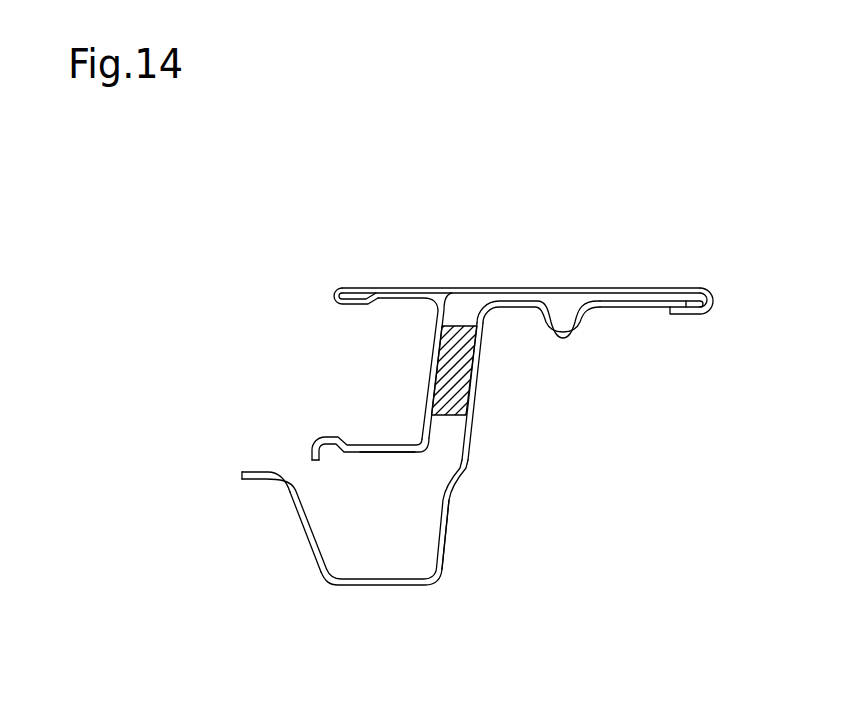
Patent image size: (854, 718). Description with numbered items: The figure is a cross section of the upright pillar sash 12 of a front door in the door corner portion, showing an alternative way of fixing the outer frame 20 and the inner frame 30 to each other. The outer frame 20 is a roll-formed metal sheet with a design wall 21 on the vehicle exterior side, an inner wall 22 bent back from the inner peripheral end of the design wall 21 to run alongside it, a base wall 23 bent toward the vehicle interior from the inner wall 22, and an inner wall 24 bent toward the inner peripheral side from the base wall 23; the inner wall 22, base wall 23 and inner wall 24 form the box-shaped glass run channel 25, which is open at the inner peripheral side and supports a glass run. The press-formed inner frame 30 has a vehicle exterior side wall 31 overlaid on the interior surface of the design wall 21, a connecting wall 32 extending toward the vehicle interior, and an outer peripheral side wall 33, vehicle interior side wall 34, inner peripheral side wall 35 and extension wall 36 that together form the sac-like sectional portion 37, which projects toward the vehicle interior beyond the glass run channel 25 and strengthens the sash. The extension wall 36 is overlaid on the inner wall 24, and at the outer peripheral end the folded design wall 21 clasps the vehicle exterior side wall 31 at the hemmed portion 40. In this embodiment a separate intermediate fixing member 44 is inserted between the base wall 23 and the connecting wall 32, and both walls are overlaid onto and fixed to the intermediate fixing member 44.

The upright pillar sash 12 is at (525, 360).
The outer frame 20 is at (513, 360).
The design wall 21 is at (560, 287).
The inner wall 22 is at (403, 302).
The base wall 23 is at (431, 377).
The inner wall 24 is at (366, 446).
The glass run channel 25 is at (385, 469).
The inner frame 30 is at (627, 322).
The vehicle exterior side wall 31 is at (659, 309).
The connecting wall 32 is at (470, 430).
The outer peripheral side wall 33 is at (450, 521).
The vehicle interior side wall 34 is at (383, 586).
The inner peripheral side wall 35 is at (303, 529).
The extension wall 36 is at (257, 471).
The sac-like sectional portion 37 is at (463, 543).
The hemmed portion 40 is at (690, 315).
The intermediate fixing member 44 is at (464, 374).